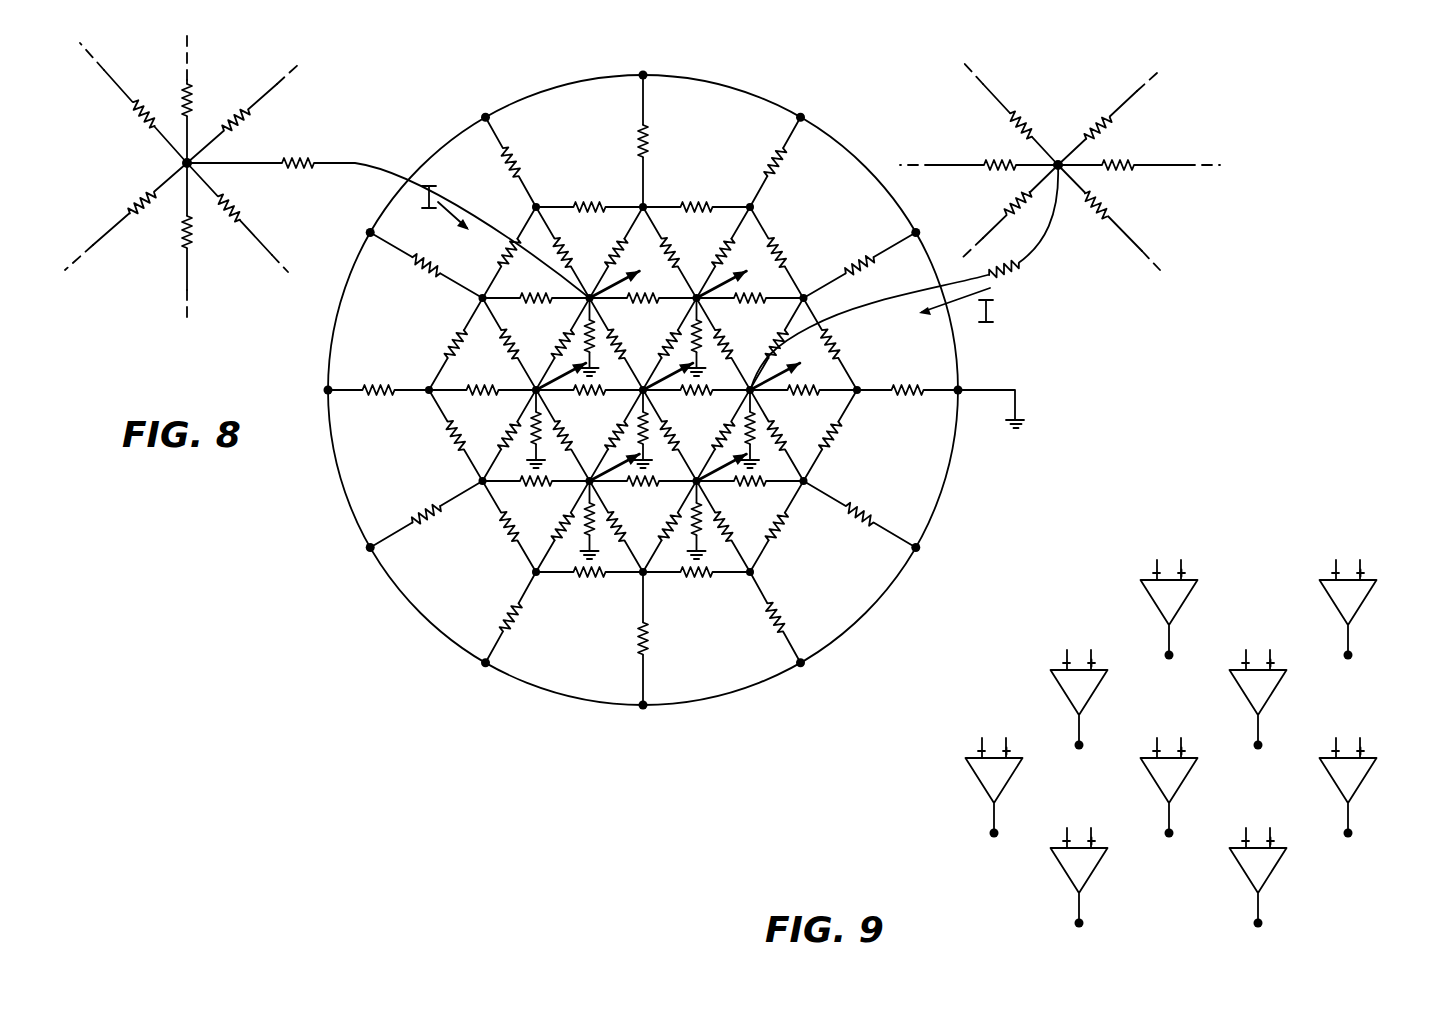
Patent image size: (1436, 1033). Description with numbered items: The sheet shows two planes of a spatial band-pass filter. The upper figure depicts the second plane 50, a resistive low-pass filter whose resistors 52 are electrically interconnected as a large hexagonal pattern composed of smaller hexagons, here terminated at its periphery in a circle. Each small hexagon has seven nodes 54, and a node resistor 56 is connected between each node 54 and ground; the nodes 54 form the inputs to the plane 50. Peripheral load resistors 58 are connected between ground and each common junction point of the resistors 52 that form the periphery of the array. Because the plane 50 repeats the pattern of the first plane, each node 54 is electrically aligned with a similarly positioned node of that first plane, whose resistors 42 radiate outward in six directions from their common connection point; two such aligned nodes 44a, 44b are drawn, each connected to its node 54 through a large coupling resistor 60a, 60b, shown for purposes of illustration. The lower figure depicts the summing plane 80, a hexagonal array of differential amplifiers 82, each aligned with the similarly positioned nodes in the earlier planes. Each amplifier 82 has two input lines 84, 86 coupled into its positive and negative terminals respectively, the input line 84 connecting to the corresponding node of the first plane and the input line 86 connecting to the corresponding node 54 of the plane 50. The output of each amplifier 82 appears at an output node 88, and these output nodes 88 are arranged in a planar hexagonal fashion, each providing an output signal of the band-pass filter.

In FIG. 8, the resistor 42 is at (183, 232).
In FIG. 8, the node 44a is at (1059, 162).
In FIG. 8, the node 44b is at (184, 164).
In FIG. 8, the second plane 50 is at (655, 390).
In FIG. 8, the resistor 52 is at (500, 328).
In FIG. 8, the node 54 is at (602, 294).
In FIG. 8, the node resistor 56 is at (702, 342).
In FIG. 8, the peripheral load resistor 58 is at (860, 268).
In FIG. 8, the coupling resistor 60a is at (1010, 270).
In FIG. 8, the coupling resistor 60b is at (300, 162).
In FIG. 9, the summing plane 80 is at (1154, 740).
In FIG. 9, the differential amplifier 82 is at (1154, 608).
In FIG. 9, the input line 84 is at (1182, 568).
In FIG. 9, the input line 86 is at (1157, 568).
In FIG. 9, the output node 88 is at (1171, 652).